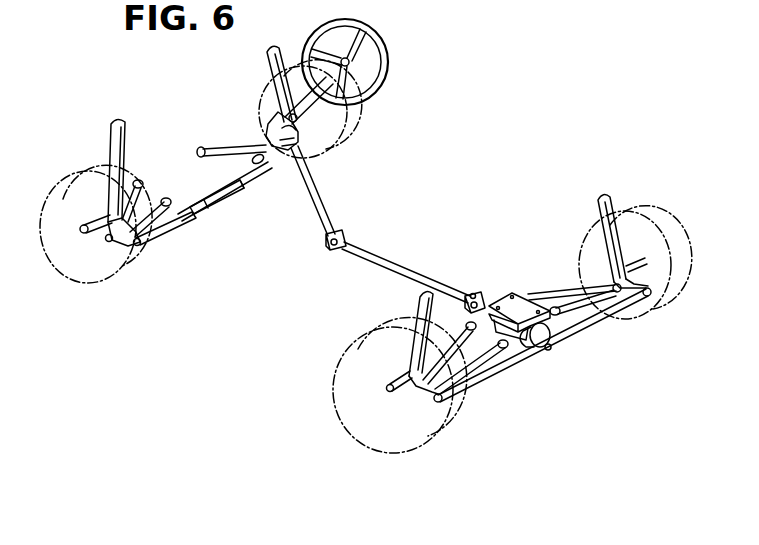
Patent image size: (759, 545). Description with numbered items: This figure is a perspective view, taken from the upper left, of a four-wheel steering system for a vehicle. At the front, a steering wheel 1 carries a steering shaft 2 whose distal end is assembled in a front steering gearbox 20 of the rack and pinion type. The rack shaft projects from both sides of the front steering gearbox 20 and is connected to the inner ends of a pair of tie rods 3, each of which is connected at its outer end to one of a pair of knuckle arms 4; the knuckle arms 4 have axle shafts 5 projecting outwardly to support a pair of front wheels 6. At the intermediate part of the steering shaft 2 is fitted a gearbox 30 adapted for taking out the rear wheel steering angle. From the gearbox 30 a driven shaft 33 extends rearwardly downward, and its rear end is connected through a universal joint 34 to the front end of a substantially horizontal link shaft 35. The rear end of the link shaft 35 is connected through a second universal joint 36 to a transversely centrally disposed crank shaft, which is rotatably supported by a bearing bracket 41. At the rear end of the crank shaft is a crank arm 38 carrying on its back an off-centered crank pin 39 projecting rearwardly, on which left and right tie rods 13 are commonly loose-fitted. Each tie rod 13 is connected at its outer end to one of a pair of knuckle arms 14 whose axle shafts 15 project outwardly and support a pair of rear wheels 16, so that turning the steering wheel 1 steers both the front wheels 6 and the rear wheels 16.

The steering wheel 1 is at (379, 47).
The steering shaft 2 is at (260, 150).
The tie rod 3 is at (159, 234).
The knuckle arm 4 is at (120, 247).
The axle shaft 5 is at (83, 227).
The front wheel 6 is at (352, 124).
The tie rod 13 is at (500, 373).
The knuckle arm 14 is at (425, 400).
The axle shaft 15 is at (388, 384).
The rear wheel 16 is at (378, 440).
The front steering gearbox 20 is at (222, 198).
The gearbox 30 is at (318, 146).
The driven shaft 33 is at (326, 200).
The universal joint 34 is at (330, 250).
The link shaft 35 is at (402, 268).
The universal joint 36 is at (474, 291).
The crank arm 38 is at (551, 340).
The crank pin 39 is at (549, 352).
The bearing bracket 41 is at (518, 298).